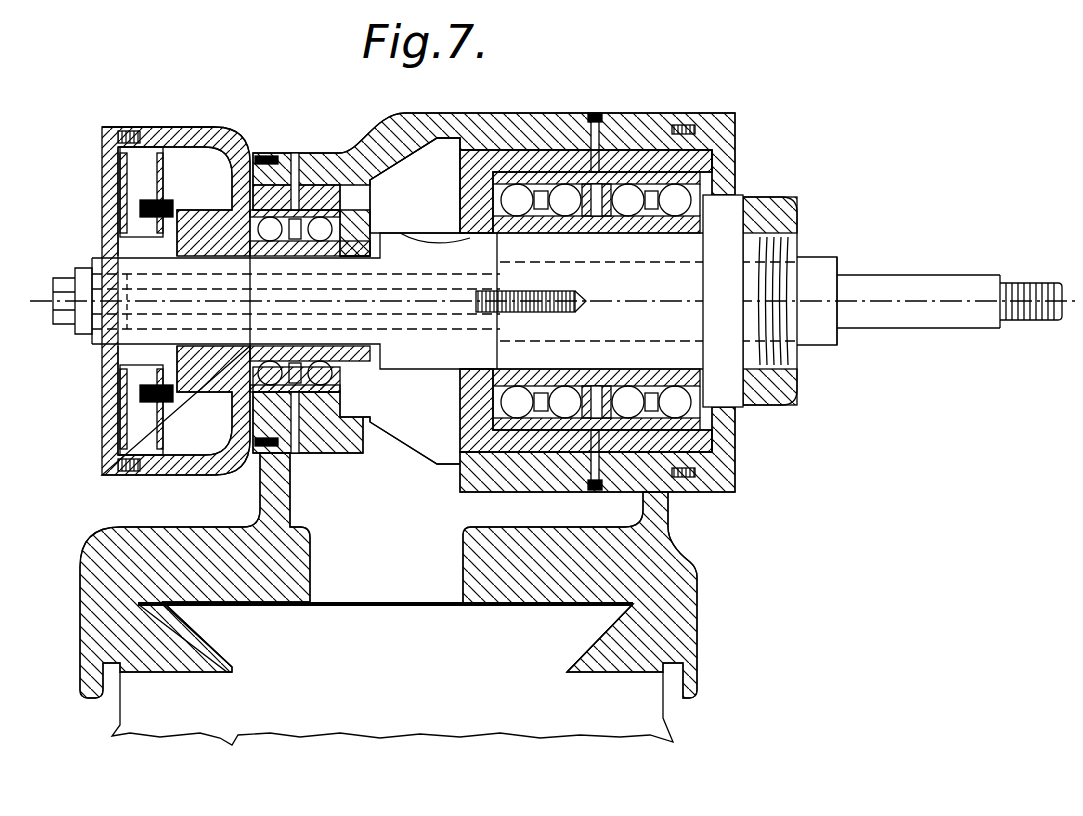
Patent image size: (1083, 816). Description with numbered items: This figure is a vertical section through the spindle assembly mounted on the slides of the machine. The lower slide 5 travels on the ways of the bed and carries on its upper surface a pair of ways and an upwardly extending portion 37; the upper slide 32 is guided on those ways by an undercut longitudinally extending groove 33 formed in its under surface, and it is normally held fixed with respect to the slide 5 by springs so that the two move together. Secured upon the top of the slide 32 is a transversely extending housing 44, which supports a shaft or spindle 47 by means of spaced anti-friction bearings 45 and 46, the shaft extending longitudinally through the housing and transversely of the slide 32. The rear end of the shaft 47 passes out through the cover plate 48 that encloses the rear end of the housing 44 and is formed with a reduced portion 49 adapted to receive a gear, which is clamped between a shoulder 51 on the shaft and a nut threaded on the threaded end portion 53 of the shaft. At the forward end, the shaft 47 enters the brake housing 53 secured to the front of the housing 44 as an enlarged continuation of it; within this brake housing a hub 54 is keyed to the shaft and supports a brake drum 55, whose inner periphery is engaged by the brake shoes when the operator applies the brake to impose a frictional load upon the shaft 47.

The slide 5 is at (647, 702).
The slide 32 is at (157, 530).
The undercut longitudinally extending groove 33 is at (172, 612).
The upwardly extending portion 37 is at (207, 642).
The housing 44 is at (347, 158).
The anti-friction bearing 45 is at (308, 363).
The anti-friction bearing 46 is at (638, 229).
The shaft or spindle 47 is at (403, 240).
The cover plate 48 is at (735, 150).
The reduced portion 49 is at (910, 283).
The shoulder 51 is at (840, 263).
The threaded end portion 53 is at (1023, 282).
The hub 54 is at (105, 360).
The brake drum 55 is at (163, 177).